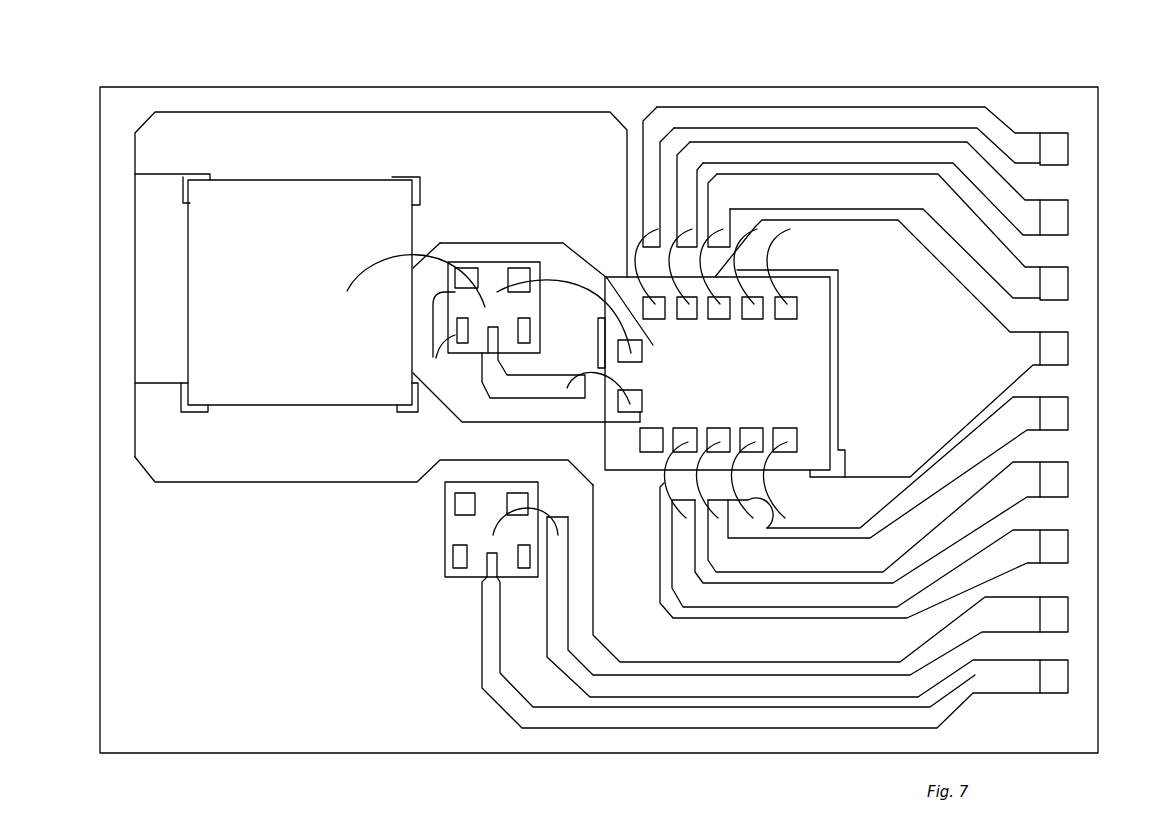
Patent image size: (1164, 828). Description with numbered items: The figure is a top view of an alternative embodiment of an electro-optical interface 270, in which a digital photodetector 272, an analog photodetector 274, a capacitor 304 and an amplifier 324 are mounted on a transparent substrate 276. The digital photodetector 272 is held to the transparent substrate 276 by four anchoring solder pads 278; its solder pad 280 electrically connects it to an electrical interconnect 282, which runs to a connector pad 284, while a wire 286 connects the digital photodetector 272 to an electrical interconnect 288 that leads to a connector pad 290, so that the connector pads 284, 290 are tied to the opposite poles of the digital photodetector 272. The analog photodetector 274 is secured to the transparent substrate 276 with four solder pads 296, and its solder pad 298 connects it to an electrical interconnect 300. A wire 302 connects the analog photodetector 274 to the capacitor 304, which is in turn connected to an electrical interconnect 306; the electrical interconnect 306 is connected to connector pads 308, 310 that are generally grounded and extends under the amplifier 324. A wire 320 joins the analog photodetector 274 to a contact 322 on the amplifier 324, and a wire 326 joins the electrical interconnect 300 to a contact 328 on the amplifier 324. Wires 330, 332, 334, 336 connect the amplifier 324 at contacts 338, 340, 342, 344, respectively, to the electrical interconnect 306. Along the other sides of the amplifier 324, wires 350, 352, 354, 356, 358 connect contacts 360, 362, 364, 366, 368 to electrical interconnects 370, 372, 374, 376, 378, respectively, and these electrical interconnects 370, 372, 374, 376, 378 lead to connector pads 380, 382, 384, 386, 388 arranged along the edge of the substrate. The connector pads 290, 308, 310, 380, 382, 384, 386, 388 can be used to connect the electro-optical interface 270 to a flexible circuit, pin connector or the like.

The electro-optical interface 270 is at (690, 86).
The digital photodetector 272 is at (453, 528).
The analog photodetector 274 is at (497, 282).
The transparent substrate 276 is at (457, 697).
The anchoring solder pads 278 is at (521, 500).
The solder pad 280 is at (490, 563).
The electrical interconnect 282 is at (566, 722).
The connector pad 284 is at (1055, 678).
The wire 286 is at (552, 503).
The electrical interconnect 288 is at (686, 687).
The connector pad 290 is at (1055, 616).
The solder pads 296 is at (450, 325).
The solder pad 298 is at (500, 336).
The electrical interconnect 300 is at (514, 388).
The wire 302 is at (414, 275).
The capacitor 304 is at (279, 207).
The electrical interconnect 306 is at (192, 135).
The connector pad 308 is at (1055, 548).
The connector pad 310 is at (1055, 350).
The wire 320 is at (552, 283).
The contact 322 is at (642, 357).
The amplifier 324 is at (841, 297).
The wire 326 is at (590, 375).
The contact 328 is at (606, 375).
The wire 330 is at (775, 490).
The wire 332 is at (767, 530).
The wire 334 is at (790, 258).
The wire 336 is at (757, 232).
The contact 338 is at (790, 436).
The contact 340 is at (751, 430).
The contact 342 is at (786, 319).
The contact 344 is at (752, 319).
The wire 350 is at (718, 520).
The wire 352 is at (663, 500).
The wire 354 is at (708, 225).
The wire 356 is at (690, 228).
The wire 358 is at (634, 262).
The contact 360 is at (718, 430).
The contact 362 is at (685, 430).
The contact 364 is at (719, 319).
The contact 366 is at (687, 319).
The contact 368 is at (654, 319).
The electrical interconnect 370 is at (1003, 440).
The electrical interconnect 372 is at (1000, 512).
The electrical interconnect 374 is at (988, 250).
The electrical interconnect 376 is at (995, 197).
The electrical interconnect 378 is at (1002, 131).
The connector pad 380 is at (1055, 415).
The connector pad 382 is at (1055, 481).
The connector pad 384 is at (1055, 285).
The connector pad 386 is at (1055, 219).
The connector pad 388 is at (1055, 151).